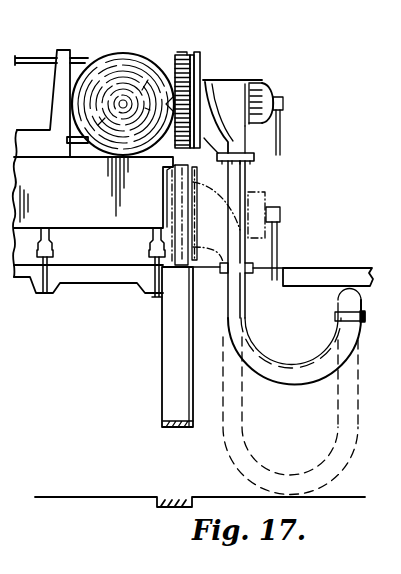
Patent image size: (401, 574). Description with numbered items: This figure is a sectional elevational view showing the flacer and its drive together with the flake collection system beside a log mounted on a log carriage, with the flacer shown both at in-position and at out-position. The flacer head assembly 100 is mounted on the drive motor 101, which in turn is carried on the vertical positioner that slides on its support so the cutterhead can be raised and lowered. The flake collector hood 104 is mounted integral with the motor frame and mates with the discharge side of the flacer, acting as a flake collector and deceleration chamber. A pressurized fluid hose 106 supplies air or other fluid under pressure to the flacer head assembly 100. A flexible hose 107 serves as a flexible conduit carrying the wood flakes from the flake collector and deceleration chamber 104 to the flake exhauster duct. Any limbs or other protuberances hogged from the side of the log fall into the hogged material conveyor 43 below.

The hogged material conveyor 43 is at (160, 380).
The flacer head assembly 100 is at (188, 54).
The drive motor 101 is at (257, 78).
The flake collector hood 104 is at (205, 72).
The pressurized fluid hose 106 is at (271, 229).
The flexible hose 107 is at (258, 350).